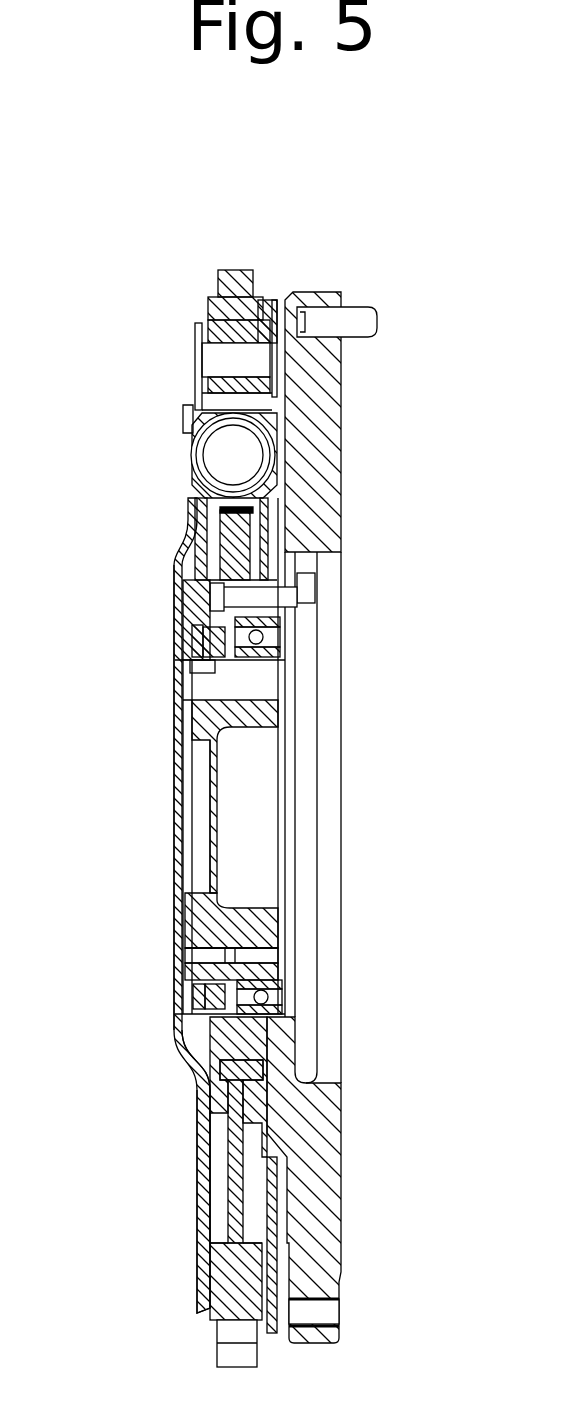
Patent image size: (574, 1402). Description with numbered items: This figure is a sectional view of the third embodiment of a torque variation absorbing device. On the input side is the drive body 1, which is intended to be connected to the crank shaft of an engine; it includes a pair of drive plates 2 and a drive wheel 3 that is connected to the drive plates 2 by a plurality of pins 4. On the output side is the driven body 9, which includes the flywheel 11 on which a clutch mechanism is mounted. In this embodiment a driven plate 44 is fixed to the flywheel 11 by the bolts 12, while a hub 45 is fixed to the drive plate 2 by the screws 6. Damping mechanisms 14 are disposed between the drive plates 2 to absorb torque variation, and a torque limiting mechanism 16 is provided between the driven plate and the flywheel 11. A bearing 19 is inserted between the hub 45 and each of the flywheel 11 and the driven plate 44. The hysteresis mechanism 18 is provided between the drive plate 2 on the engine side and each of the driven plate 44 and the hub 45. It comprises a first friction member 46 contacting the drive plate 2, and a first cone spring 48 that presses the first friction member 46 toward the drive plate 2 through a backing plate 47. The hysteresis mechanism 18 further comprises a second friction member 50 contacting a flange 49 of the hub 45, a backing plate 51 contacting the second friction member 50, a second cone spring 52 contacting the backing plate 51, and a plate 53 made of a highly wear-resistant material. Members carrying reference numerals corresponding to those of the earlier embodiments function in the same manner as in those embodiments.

The drive body 1 is at (162, 303).
The drive plates 2 is at (194, 268).
The drive wheel 3 is at (232, 327).
The pins 4 is at (210, 352).
The screws 6 is at (180, 940).
The driven body 9 is at (376, 291).
The flywheel 11 is at (318, 430).
The bolts 12 is at (307, 597).
The damping mechanisms 14 is at (170, 443).
The torque limiting mechanism 16 is at (177, 522).
The hysteresis mechanism 18 is at (160, 605).
The bearing 19 is at (282, 634).
The driven plate 44 is at (247, 1037).
The hub 45 is at (260, 928).
The first friction member 46 is at (182, 1036).
The backing plate 47 is at (205, 1077).
The first cone spring 48 is at (186, 1022).
The flange 49 is at (245, 975).
The second friction member 50 is at (192, 1010).
The backing plate 51 is at (195, 990).
The second cone spring 52 is at (195, 1002).
The plate 53 is at (197, 997).